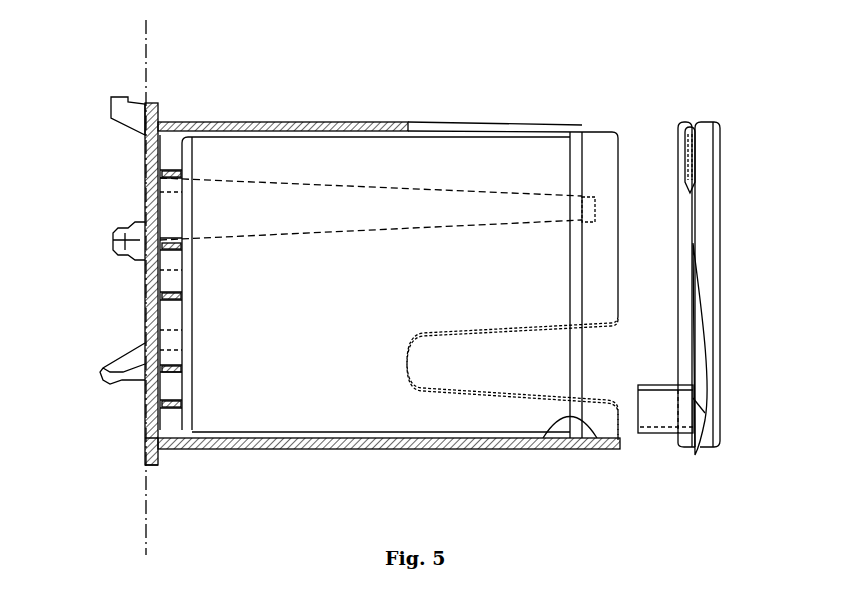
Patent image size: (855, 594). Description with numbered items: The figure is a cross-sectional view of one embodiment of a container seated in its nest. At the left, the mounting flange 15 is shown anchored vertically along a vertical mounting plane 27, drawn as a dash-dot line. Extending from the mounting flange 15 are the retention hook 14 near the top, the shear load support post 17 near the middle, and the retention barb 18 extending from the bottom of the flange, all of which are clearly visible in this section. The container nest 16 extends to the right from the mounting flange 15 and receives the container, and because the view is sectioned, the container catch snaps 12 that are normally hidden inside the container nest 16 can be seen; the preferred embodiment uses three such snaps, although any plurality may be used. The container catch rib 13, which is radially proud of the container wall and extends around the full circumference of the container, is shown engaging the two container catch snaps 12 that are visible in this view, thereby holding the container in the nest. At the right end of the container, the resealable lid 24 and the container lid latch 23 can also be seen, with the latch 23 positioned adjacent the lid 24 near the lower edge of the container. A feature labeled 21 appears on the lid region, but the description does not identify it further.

The container catch snap 12 is at (596, 207).
The container catch rib 13 is at (582, 167).
The retention hook 14 is at (111, 110).
The mounting flange 15 is at (145, 452).
The container nest 16 is at (383, 122).
The shear load support post 17 is at (113, 240).
The retention barb 18 is at (105, 365).
The slot 21 is at (697, 150).
The container lid latch 23 is at (662, 425).
The resealable lid 24 is at (707, 323).
The vertical mounting plane 27 is at (146, 42).